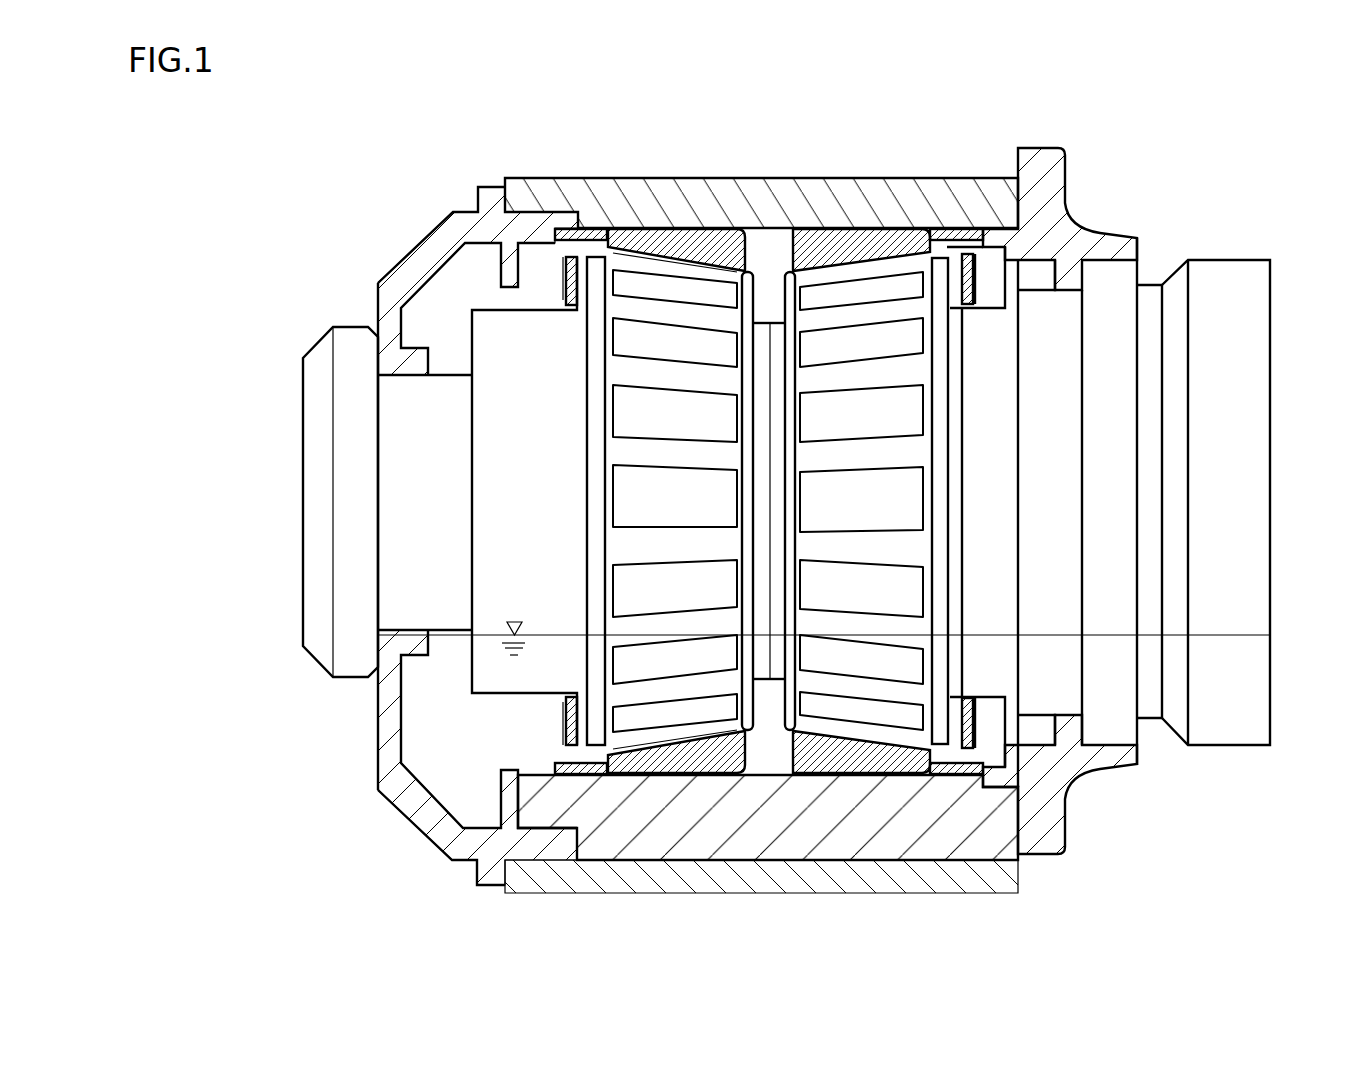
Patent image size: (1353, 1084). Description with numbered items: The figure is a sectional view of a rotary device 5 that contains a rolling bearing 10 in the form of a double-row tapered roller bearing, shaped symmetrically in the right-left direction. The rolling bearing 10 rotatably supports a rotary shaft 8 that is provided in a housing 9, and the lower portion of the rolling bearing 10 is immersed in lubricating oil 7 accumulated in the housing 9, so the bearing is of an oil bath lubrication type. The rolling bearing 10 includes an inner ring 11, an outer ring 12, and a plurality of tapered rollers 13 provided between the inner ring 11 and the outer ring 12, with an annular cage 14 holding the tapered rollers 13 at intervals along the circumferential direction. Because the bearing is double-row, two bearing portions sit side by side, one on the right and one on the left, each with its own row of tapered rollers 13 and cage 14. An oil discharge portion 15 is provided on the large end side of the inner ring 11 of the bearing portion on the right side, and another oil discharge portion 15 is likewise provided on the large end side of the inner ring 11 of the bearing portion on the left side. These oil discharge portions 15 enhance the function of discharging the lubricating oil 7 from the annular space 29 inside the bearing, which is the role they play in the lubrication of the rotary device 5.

The rotary device 5 is at (1051, 142).
The lubricating oil 7 is at (441, 735).
The rotary shaft 8 is at (1060, 308).
The housing 9 is at (414, 836).
The rolling bearing 10 is at (874, 222).
The inner ring 11 is at (862, 690).
The outer ring 12 is at (826, 236).
The tapered rollers 13 is at (902, 285).
The cage 14 is at (943, 272).
The oil discharge portion 15 is at (556, 730).
The annular space 29 is at (708, 715).